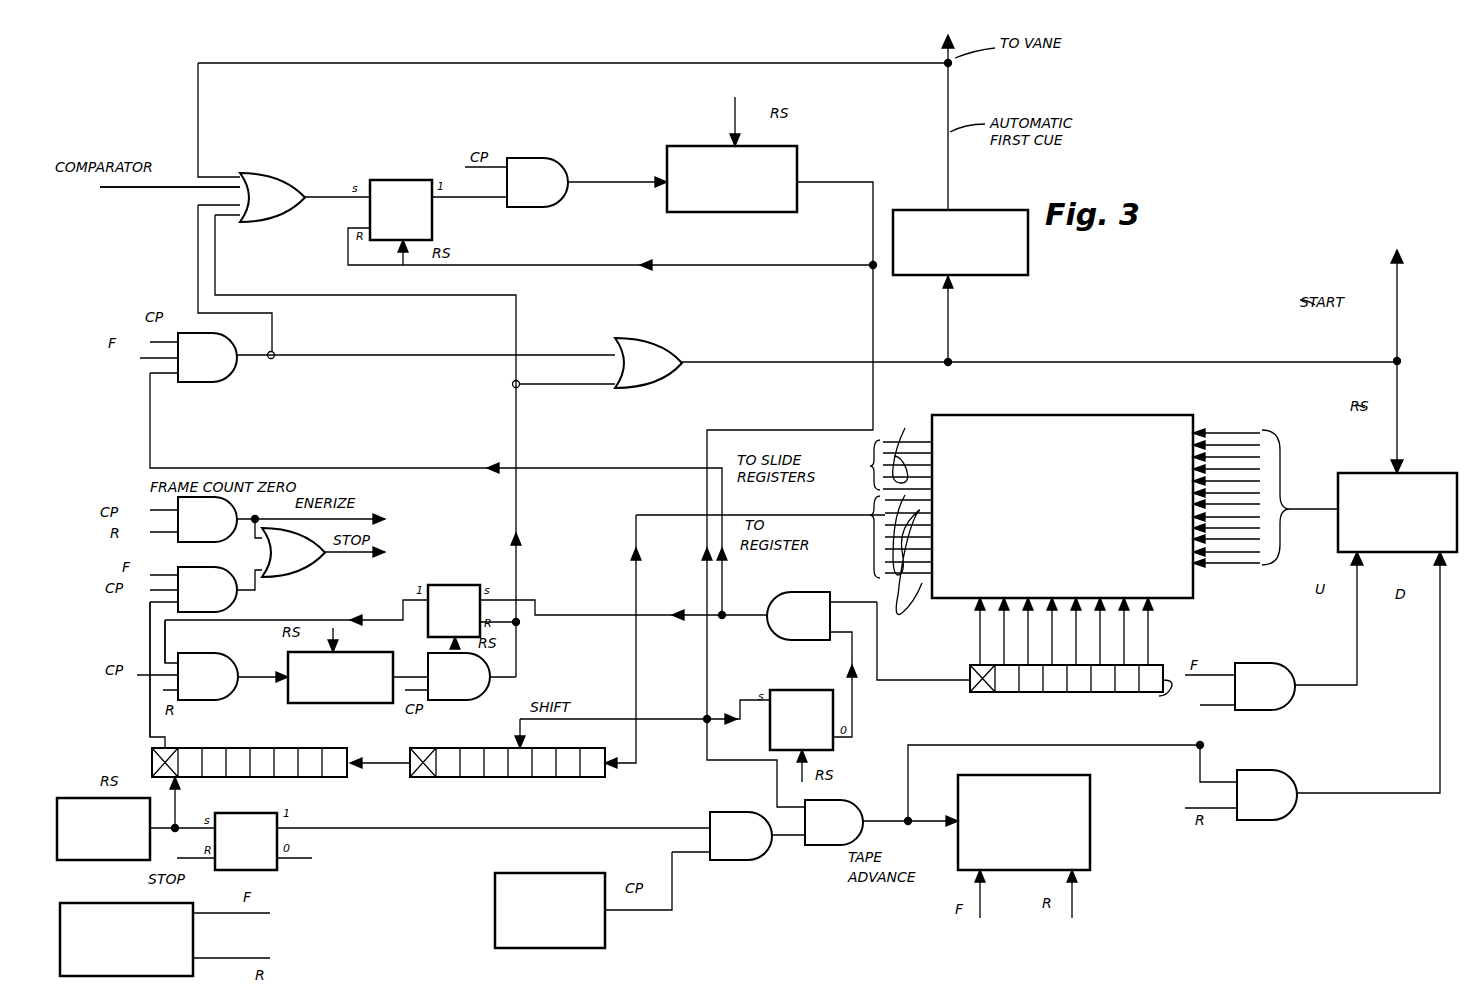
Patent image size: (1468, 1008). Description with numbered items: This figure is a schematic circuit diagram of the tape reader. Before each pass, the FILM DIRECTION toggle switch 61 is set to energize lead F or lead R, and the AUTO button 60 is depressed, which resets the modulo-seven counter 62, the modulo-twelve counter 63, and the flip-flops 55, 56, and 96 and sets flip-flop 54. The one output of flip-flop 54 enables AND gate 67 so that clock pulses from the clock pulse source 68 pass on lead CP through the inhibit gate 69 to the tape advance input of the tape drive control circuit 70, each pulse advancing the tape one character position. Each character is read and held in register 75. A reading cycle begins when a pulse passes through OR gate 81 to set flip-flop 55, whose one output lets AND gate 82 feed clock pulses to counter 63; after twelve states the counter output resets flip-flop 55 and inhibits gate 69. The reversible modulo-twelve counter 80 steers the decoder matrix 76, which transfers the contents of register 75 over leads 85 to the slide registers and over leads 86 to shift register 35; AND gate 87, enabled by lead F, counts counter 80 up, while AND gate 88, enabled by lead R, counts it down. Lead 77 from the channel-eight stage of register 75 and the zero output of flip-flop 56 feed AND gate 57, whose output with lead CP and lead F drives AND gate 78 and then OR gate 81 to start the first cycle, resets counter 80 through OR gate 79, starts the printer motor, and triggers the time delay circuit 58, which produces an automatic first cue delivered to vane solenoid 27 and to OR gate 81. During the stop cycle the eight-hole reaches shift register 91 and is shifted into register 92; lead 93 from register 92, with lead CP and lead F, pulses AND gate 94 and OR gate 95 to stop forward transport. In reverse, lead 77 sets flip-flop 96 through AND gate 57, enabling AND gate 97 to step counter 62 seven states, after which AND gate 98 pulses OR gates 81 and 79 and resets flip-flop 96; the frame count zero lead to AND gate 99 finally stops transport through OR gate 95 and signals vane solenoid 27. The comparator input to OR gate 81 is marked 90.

The vane solenoid 27 is at (1047, 61).
The shift register 35 is at (749, 565).
The R-S flip-flop 54 is at (277, 866).
The R-S flip-flop 55 is at (425, 180).
The R-S flip-flop 56 is at (812, 670).
The AND gate 57 is at (775, 640).
The time delay circuit 58 is at (1028, 263).
The AUTO button 60 is at (88, 783).
The FILM DIRECTION toggle switch 61 is at (115, 888).
The modulo-7 counter 62 is at (340, 703).
The modulo-12 counter 63 is at (745, 212).
The AND gate 67 is at (735, 860).
The clock pulse source 68 is at (555, 948).
The inhibit gate 69 is at (815, 845).
The tape drive control circuit 70 is at (1090, 802).
The register 75 is at (1159, 696).
The decoder matrix 76 is at (1168, 598).
The lead 77 is at (1000, 692).
The AND gate 78 is at (237, 378).
The OR gate 79 is at (680, 380).
The modulo-12 counter 80 is at (1338, 476).
The OR gate 81 is at (298, 222).
The AND gate 82 is at (555, 207).
The leads 85 is at (901, 445).
The leads 86 is at (901, 557).
The AND gate 87 is at (1265, 663).
The AND gate 88 is at (1285, 820).
The comparator input line 90 is at (192, 187).
The shift register 91 is at (575, 777).
The register 92 is at (320, 777).
The lead 93 is at (165, 620).
The AND gate 94 is at (232, 606).
The OR gate 95 is at (312, 577).
The flip-flop 96 is at (478, 585).
The AND gate 97 is at (222, 700).
The AND gate 98 is at (462, 700).
The AND gate 99 is at (205, 542).